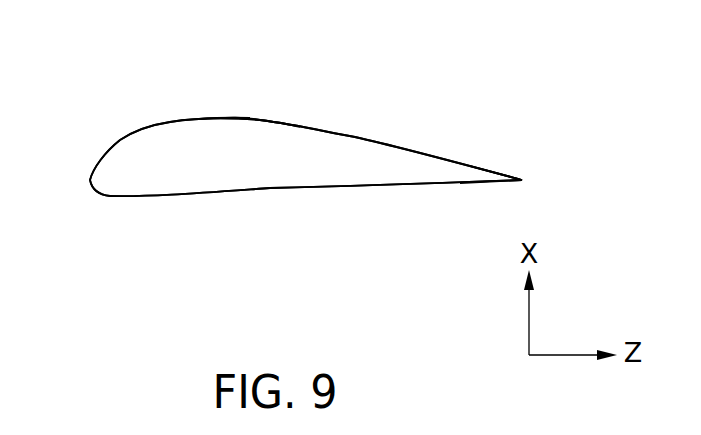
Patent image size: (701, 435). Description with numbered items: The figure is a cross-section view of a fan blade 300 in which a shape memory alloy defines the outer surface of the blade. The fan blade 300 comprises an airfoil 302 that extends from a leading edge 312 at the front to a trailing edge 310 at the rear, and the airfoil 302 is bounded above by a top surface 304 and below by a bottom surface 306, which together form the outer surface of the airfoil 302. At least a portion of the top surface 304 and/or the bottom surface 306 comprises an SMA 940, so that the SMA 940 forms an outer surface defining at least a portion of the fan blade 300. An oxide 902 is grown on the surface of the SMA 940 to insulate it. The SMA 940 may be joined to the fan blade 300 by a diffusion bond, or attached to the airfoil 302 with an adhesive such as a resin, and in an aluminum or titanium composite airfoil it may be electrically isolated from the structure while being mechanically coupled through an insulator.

The fan blade 300 is at (460, 70).
The airfoil 302 is at (352, 137).
The top surface 304 is at (170, 122).
The bottom surface 306 is at (268, 188).
The trailing edge 310 is at (522, 180).
The leading edge 312 is at (90, 178).
The oxide 902 is at (235, 122).
The SMA 940 is at (258, 120).